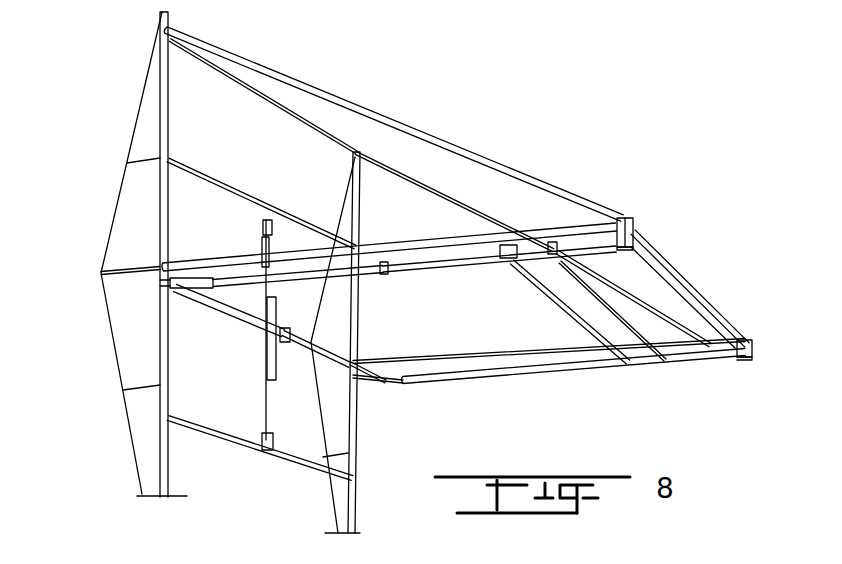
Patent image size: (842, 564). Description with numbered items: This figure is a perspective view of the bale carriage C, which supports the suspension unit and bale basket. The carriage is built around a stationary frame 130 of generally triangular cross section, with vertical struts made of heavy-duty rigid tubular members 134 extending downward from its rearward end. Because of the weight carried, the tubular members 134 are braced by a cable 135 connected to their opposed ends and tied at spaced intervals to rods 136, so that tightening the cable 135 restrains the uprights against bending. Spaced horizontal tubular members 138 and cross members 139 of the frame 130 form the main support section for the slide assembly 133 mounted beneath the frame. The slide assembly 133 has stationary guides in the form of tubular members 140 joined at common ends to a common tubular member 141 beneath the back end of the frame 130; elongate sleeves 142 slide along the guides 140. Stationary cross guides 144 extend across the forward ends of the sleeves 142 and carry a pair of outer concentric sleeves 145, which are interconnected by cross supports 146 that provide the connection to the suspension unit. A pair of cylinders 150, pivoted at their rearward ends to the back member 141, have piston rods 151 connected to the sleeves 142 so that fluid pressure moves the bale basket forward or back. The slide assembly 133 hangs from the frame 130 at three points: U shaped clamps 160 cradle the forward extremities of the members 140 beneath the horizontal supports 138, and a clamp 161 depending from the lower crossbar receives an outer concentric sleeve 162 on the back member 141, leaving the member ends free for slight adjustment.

The stationary frame 130 is at (463, 127).
The bale carriage C is at (554, 158).
The slide assembly 133 is at (597, 400).
The tubular members 134 is at (172, 463).
The cable 135 is at (118, 195).
The rods 136 is at (122, 276).
The horizontal tubular members 138 is at (378, 246).
The cross members 139 is at (713, 297).
The tubular members 140 is at (640, 232).
The common tubular member 141 is at (190, 296).
The elongate sleeves 142 is at (520, 276).
The stationary cross guides 144 is at (500, 270).
The outer concentric sleeves 145 is at (567, 325).
The cross supports 146 is at (550, 293).
The cylinders 150 is at (340, 274).
The piston rods 151 is at (407, 273).
The U shaped clamps 160 is at (641, 247).
The clamp 161 is at (268, 363).
The outer concentric sleeve 162 is at (264, 330).